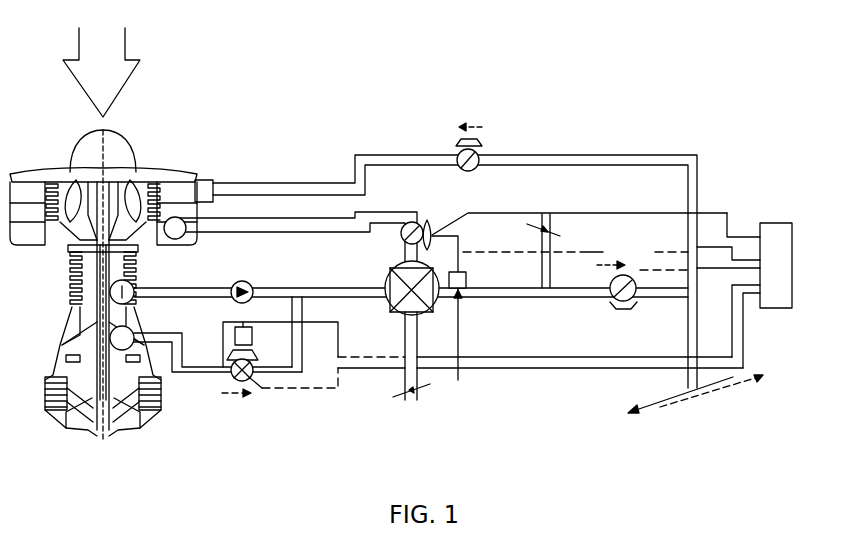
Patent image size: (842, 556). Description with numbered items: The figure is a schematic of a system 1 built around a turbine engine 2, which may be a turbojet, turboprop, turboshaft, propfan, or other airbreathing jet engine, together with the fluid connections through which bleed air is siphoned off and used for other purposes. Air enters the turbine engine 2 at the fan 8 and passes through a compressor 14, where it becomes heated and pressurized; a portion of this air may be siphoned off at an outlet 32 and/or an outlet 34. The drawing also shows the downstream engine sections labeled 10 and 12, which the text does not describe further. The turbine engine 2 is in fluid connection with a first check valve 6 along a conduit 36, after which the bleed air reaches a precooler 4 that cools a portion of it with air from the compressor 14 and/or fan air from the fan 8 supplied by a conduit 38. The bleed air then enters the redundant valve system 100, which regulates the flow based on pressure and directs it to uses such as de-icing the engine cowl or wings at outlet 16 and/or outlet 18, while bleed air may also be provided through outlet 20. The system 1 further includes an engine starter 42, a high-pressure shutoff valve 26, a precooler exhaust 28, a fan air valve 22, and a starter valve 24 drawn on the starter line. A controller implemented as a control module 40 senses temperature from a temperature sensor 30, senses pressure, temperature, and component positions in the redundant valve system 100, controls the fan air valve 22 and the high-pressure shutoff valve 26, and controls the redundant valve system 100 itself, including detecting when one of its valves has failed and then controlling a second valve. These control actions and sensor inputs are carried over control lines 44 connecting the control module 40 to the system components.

The system 1 is at (527, 75).
The turbine engine 2 is at (41, 136).
The precooler 4 is at (380, 280).
The first check valve 6 is at (233, 284).
The fan 8 is at (143, 171).
The high pressure turbine 10 is at (68, 335).
The low pressure turbine 12 is at (44, 385).
The compressor 14 is at (58, 230).
The outlet 16 is at (722, 388).
The outlet 18 is at (668, 399).
The outlet 20 is at (545, 226).
The fan air valve 22 is at (420, 224).
The starter valve 24 is at (458, 150).
The high-pressure shutoff valve 26 is at (232, 368).
The precooler exhaust 28 is at (409, 391).
The temperature sensor 30 is at (460, 380).
The outlet 32 is at (136, 290).
The outlet 34 is at (140, 342).
The conduit 36 is at (270, 290).
The conduit 38 is at (262, 226).
The control module 40 is at (778, 223).
The engine starter 42 is at (215, 184).
The control lines 44 is at (721, 196).
The redundant valve system 100 is at (612, 296).